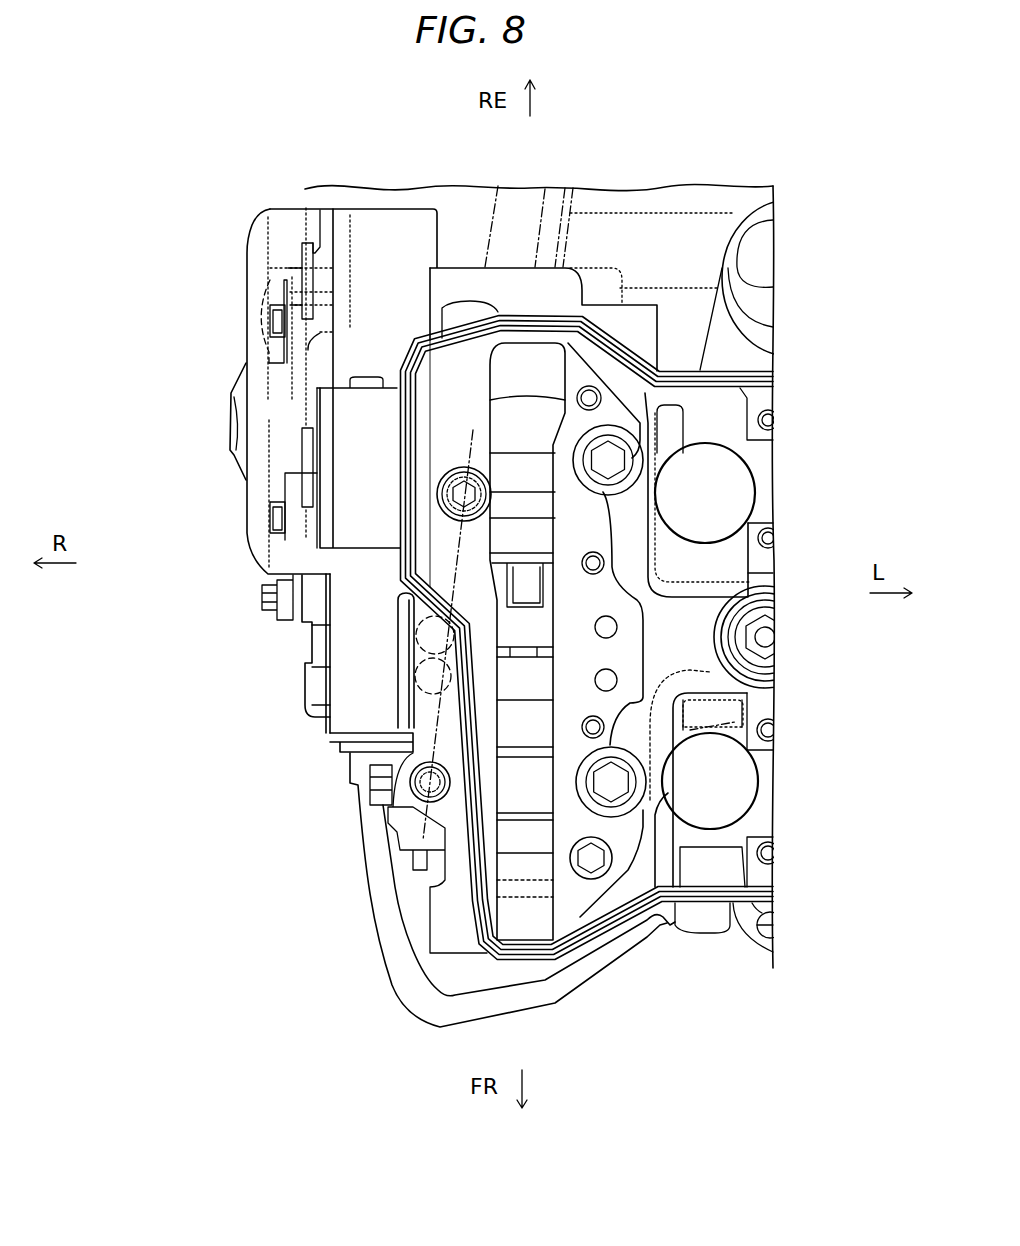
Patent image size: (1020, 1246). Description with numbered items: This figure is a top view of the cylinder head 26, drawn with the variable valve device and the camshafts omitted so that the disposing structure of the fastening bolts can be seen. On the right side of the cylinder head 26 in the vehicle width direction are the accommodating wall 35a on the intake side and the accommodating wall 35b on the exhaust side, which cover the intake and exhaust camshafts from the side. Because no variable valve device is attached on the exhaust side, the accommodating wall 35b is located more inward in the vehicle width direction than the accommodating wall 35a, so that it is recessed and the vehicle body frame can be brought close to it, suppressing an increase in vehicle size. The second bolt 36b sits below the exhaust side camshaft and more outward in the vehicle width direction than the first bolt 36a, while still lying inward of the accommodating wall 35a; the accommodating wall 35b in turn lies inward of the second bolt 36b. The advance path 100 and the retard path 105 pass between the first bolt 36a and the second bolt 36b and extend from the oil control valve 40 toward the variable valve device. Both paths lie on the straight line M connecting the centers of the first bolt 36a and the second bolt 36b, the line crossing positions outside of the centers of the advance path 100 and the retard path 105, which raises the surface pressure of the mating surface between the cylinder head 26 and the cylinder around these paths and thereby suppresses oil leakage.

The accommodating wall on the intake side 35a is at (395, 461).
The first bolt 36a is at (437, 494).
The oil control valve 40 is at (353, 532).
The retard path 105 is at (397, 620).
The advance path 100 is at (397, 658).
The accommodating wall on the exhaust side 35b is at (413, 713).
The second bolt 36b is at (410, 782).
The cylinder head 26 is at (776, 637).
The straight line M is at (545, 560).